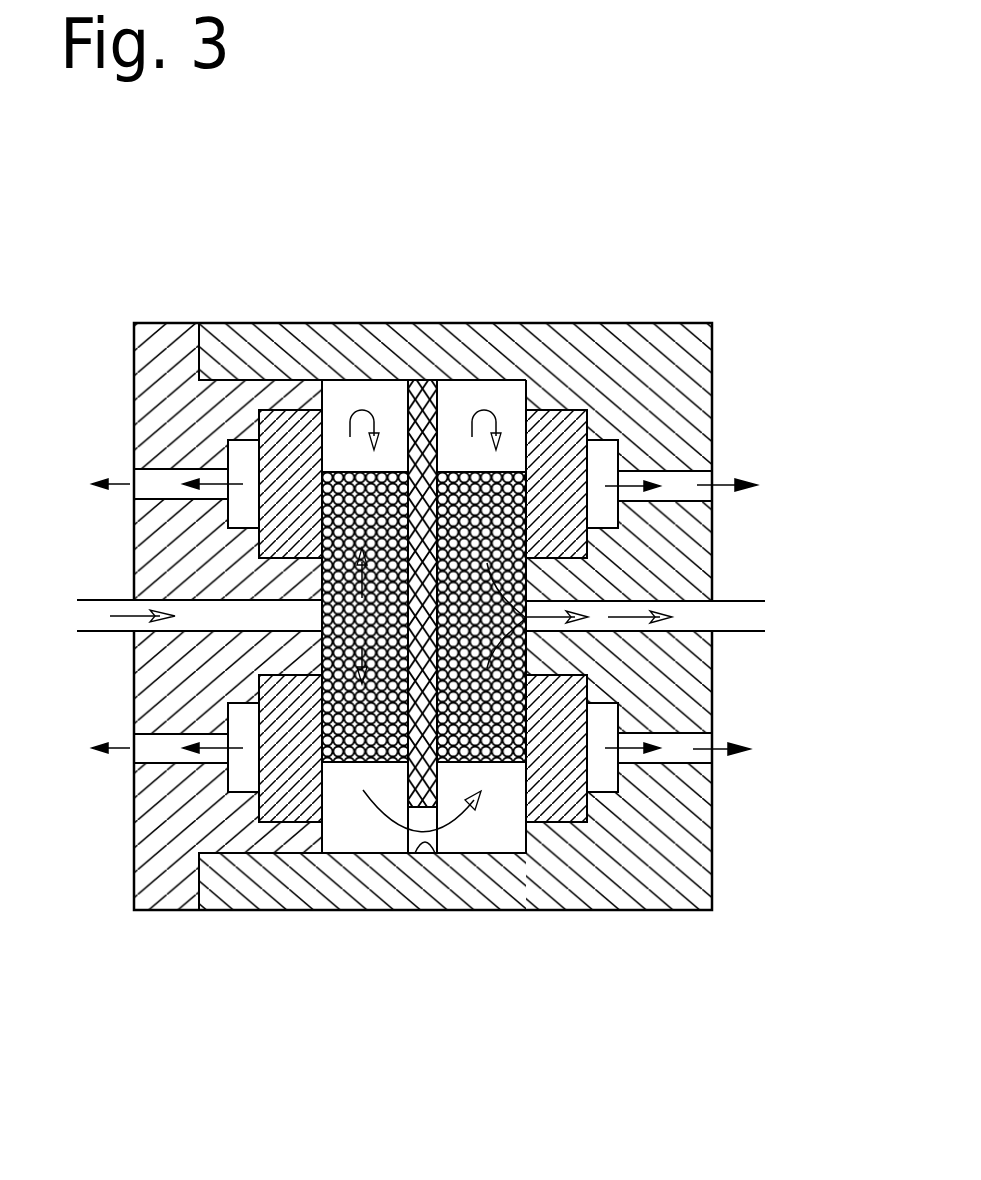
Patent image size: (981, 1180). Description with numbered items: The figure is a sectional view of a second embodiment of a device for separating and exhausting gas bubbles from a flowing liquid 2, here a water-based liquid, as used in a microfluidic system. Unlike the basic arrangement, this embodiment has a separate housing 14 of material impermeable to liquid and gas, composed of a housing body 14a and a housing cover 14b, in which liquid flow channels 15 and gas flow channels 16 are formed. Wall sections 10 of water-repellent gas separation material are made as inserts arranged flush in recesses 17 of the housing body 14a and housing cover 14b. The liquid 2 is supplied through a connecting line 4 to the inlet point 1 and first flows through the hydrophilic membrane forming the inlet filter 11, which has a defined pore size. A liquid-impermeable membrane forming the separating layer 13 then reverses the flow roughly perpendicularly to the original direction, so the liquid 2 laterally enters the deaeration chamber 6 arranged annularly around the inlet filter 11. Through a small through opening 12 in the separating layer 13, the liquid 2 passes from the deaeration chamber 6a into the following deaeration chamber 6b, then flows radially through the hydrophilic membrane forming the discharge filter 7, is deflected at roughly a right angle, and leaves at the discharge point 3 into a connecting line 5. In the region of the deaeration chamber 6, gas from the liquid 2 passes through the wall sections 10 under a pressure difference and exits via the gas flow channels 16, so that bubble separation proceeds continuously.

The inlet point 1 is at (315, 625).
The liquid 2 is at (650, 635).
The discharge point 3 is at (526, 618).
The connecting line 4 is at (120, 600).
The connecting line 5 is at (737, 623).
The deaeration chamber 6 is at (372, 392).
The deaeration chamber 6a is at (358, 825).
The deaeration chamber 6b is at (493, 837).
The discharge filter 7 is at (490, 488).
The wall sections 10 is at (283, 433).
The inlet filter 11 is at (380, 493).
The through opening 12 is at (428, 845).
The separating layer 13 is at (427, 705).
The housing 14 is at (591, 250).
The housing body 14a is at (640, 372).
The housing cover 14b is at (170, 358).
The liquid flow channels 15 is at (240, 600).
The gas flow channels 16 is at (175, 475).
The recesses 17 is at (293, 812).